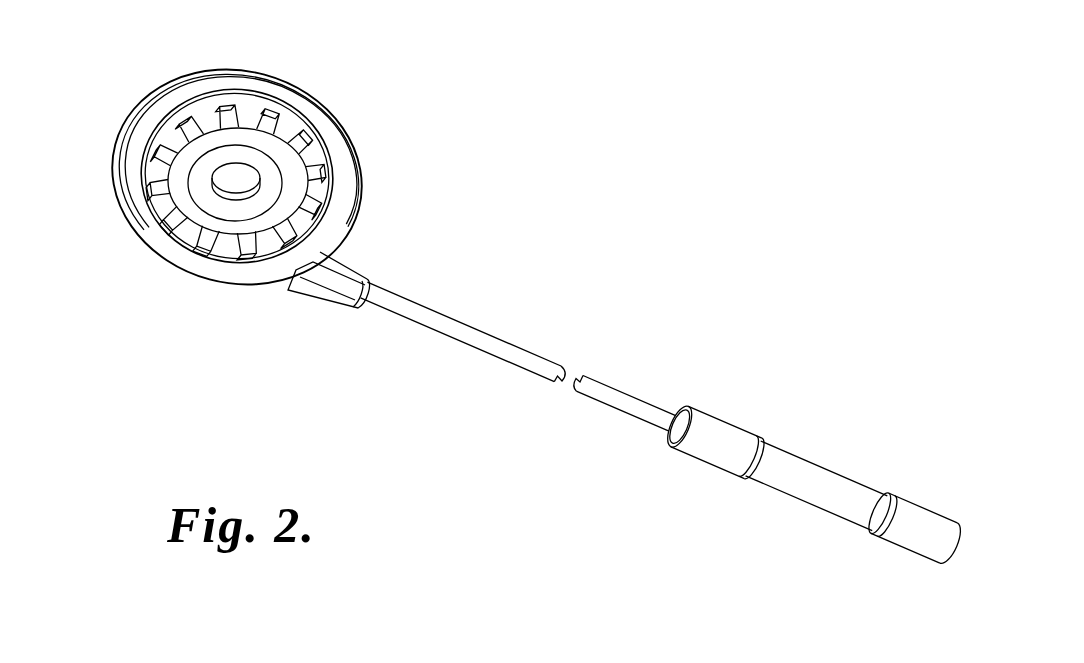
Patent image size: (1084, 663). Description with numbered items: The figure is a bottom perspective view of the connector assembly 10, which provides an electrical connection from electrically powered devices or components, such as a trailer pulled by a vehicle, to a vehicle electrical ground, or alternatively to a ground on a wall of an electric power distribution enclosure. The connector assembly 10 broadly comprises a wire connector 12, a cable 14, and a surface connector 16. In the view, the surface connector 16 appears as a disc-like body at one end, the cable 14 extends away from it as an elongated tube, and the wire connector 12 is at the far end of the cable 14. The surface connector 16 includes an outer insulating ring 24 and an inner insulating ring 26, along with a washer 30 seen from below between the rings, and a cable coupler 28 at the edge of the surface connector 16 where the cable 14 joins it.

The connector assembly 10 is at (633, 197).
The wire connector 12 is at (770, 422).
The cable 14 is at (497, 323).
The surface connector 16 is at (162, 63).
The outer insulating ring 24 is at (143, 231).
The inner insulating ring 26 is at (272, 177).
The cable coupler 28 is at (310, 285).
The washer 30 is at (255, 100).